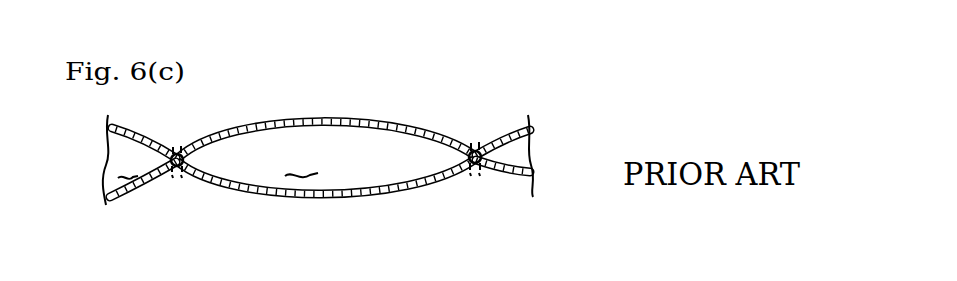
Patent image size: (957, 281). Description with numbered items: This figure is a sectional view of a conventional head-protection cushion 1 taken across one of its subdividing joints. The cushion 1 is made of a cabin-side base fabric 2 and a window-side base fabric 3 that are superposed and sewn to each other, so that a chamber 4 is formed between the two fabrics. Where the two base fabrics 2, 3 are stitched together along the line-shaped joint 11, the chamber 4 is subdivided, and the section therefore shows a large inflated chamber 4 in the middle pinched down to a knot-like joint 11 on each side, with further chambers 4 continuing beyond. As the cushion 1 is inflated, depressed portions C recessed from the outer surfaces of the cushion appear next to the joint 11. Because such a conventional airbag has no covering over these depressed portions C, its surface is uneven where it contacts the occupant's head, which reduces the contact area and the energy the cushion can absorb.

The protective cushion 1 is at (318, 152).
The cabin-side base fabric 2 is at (320, 200).
The window-side base fabric 3 is at (333, 115).
The chamber 4 is at (324, 158).
The joint 11 is at (176, 183).
The depressed portion C is at (185, 187).